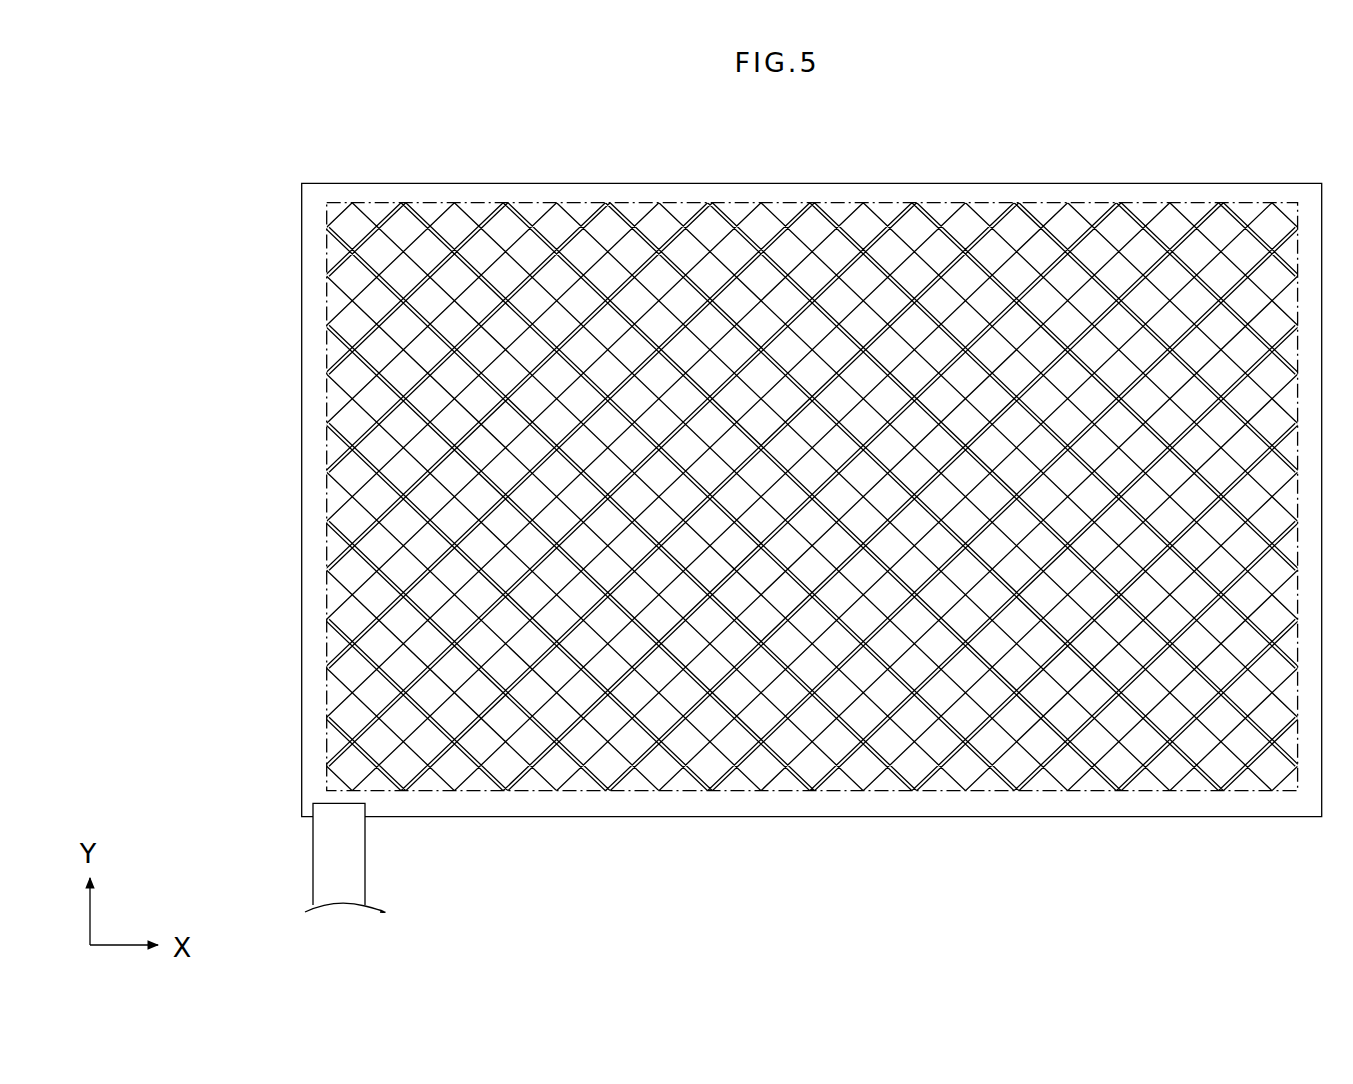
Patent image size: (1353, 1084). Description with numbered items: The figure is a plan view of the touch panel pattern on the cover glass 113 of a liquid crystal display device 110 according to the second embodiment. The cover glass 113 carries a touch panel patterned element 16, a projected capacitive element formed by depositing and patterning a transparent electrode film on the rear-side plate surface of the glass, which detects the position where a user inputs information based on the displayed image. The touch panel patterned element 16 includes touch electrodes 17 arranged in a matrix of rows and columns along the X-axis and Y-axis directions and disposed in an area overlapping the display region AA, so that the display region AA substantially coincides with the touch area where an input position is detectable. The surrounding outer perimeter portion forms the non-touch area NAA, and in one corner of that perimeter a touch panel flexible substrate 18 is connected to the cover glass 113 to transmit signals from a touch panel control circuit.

The touch panel patterned element 16 is at (376, 446).
The touch electrodes 17 is at (432, 247).
The touch panel flexible substrate 18 is at (335, 855).
The liquid crystal display device 110 is at (1030, 185).
The cover glass 113 is at (935, 190).
The display region AA is at (830, 200).
The non-active area NAA is at (777, 814).